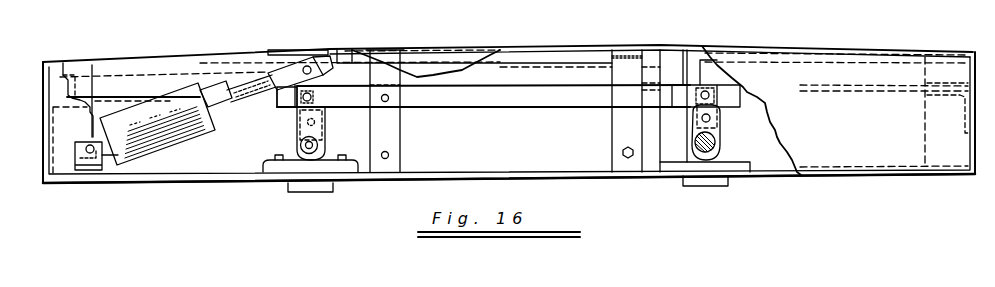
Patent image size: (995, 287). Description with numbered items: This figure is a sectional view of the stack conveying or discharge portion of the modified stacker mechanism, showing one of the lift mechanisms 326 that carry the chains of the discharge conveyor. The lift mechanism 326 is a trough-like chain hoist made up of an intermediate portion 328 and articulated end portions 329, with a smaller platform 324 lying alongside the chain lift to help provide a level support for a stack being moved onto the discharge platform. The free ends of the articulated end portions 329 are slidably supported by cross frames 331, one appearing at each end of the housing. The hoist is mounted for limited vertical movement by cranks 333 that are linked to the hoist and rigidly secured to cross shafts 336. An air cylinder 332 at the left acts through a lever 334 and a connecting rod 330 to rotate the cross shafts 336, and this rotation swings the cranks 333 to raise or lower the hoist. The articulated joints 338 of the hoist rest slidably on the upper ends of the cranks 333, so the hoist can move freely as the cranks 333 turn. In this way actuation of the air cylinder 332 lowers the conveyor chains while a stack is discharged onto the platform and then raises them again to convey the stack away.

The smaller platform 324 is at (562, 45).
The lift mechanism 326 is at (344, 49).
The intermediate portion 328 is at (520, 63).
The articulated end portion 329 is at (164, 72).
The connecting rod 330 is at (512, 95).
The cross frame 331 is at (78, 98).
The air cylinder 332 is at (200, 143).
The crank 333 is at (720, 116).
The lever 334 is at (335, 58).
The cross shaft 336 is at (300, 146).
The articulated joint 338 is at (672, 98).